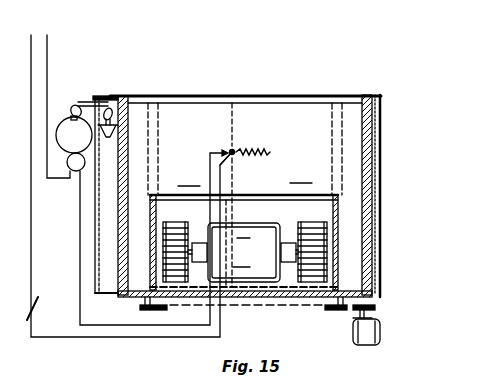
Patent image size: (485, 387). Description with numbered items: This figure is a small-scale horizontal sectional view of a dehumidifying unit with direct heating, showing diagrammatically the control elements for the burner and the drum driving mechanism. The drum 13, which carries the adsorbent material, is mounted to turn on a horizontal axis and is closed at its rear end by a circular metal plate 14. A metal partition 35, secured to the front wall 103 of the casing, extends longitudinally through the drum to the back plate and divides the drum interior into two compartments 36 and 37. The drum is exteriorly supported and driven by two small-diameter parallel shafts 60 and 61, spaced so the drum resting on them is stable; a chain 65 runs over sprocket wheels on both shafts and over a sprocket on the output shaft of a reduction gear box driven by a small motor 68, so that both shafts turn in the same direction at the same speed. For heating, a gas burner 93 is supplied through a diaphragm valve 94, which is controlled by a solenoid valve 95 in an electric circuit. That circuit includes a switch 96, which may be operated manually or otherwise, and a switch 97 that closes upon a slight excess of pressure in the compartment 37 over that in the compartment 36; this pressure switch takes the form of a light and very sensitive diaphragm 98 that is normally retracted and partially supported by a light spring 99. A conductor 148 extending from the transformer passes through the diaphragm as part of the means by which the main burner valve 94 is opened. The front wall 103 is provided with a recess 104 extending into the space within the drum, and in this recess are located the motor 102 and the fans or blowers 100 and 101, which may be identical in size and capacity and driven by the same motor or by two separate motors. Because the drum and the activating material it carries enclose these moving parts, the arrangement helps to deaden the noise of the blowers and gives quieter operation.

The drum 13 is at (367, 146).
The circular metal plate 14 is at (279, 95).
The metal partition 35 is at (236, 188).
The compartment 36 is at (189, 178).
The compartment 37 is at (301, 175).
The shaft 60 is at (160, 150).
The shaft 61 is at (333, 117).
The chain 65 is at (265, 307).
The small motor 68 is at (382, 330).
The gas burner 93 is at (113, 208).
The diaphragm valve 94 is at (61, 119).
The solenoid valve 95 is at (72, 174).
The switch 96 is at (40, 306).
The switch 97 is at (230, 148).
The diaphragm 98 is at (234, 152).
The light spring 99 is at (270, 152).
The fan or blower 100 is at (181, 284).
The fan or blower 101 is at (378, 207).
The motor 102 is at (243, 252).
The front wall 103 is at (132, 304).
The recess 104 is at (287, 223).
The conductor 148 is at (80, 262).